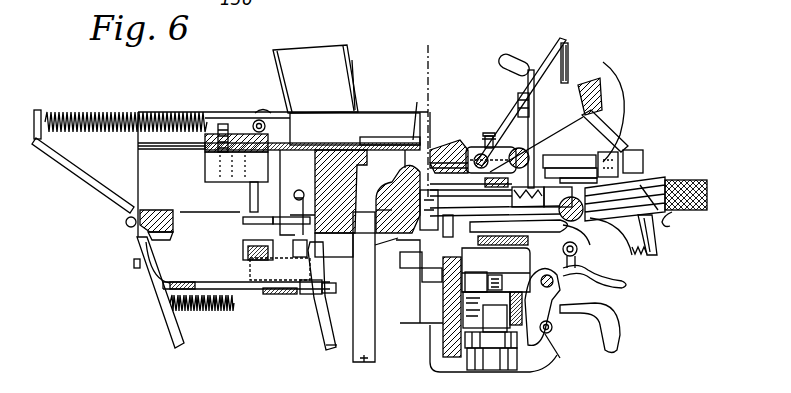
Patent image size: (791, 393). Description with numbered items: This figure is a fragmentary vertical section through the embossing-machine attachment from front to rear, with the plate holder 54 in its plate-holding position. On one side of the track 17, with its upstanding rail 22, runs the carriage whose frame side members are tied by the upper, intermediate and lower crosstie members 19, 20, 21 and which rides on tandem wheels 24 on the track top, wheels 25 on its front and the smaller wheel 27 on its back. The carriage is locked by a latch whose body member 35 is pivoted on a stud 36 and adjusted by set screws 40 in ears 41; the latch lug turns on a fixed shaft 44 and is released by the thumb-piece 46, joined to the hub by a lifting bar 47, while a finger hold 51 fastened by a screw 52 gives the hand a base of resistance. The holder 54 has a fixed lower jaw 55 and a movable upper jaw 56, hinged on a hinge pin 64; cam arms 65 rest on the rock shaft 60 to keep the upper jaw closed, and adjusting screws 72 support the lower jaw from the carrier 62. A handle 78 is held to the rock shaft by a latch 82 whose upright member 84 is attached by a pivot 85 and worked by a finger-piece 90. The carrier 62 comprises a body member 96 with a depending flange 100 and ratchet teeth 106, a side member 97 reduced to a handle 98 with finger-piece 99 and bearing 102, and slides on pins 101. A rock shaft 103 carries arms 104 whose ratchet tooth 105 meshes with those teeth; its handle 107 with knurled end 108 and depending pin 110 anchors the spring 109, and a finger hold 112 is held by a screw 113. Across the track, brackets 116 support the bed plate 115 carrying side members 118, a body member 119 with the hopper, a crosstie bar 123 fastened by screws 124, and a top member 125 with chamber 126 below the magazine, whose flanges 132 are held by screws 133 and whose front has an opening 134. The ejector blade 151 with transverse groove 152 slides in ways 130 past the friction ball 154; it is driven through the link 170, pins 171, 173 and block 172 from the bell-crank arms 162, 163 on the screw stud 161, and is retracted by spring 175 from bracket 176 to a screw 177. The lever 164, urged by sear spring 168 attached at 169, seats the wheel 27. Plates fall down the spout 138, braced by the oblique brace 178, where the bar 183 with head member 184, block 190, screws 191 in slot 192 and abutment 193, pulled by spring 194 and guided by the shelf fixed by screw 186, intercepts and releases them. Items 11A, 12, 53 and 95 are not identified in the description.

The firearm receiver 11A is at (190, 106).
The section line 12 is at (446, 72).
The track 17 is at (443, 312).
The upper crosstie member 19 is at (600, 98).
The intermediate crosstie member 20 is at (463, 227).
The lower crosstie member 21 is at (493, 359).
The track rail 22 is at (430, 282).
The wheels 24 is at (432, 210).
The second pair of wheels 25 is at (490, 362).
The wheel 27 is at (477, 269).
The body member 35 is at (540, 272).
The stud 36 is at (497, 270).
The set screws 40 is at (499, 302).
The ears 41 is at (503, 263).
The shaft 44 is at (592, 271).
The thumb-piece 46 is at (635, 284).
The lifting bar 47 is at (539, 341).
The finger hold 51 is at (620, 320).
The screw 52 is at (565, 356).
The plate 53 is at (443, 337).
The holder 54 is at (412, 165).
The lower jaw 55 is at (408, 176).
The upper jaw 56 is at (457, 146).
The rock shaft 60 is at (527, 154).
The carrier 62 is at (495, 222).
The hinge pin 64 is at (477, 150).
The cam arms 65 is at (490, 133).
The adjusting screws 72 is at (481, 152).
The handle 78 is at (572, 60).
The latch 82 is at (543, 62).
The upright member 84 is at (567, 82).
The pivot 85 is at (518, 98).
The finger-piece 90 is at (516, 58).
The bar 95 is at (569, 152).
The body member 96 is at (485, 183).
The side member 97 is at (563, 204).
The handle 98 is at (632, 186).
The finger-piece 99 is at (670, 230).
The flange 100 is at (471, 199).
The pins 101 is at (391, 202).
The bearing 102 is at (600, 166).
The rock shaft 103 is at (571, 174).
The arms 104 is at (580, 232).
The ratchet tooth 105 is at (530, 197).
The ratchet teeth 106 is at (519, 229).
The handle 107 is at (660, 192).
The knurled outer end portion 108 is at (707, 185).
The coiled spring 109 is at (648, 258).
The pin 110 is at (657, 247).
The finger hold 112 is at (620, 236).
The screw 113 is at (578, 249).
The bed plate 115 is at (170, 225).
The brackets 116 is at (401, 295).
The side members 118 is at (138, 174).
The body member 119 is at (317, 178).
The crosstie bar 123 is at (218, 182).
The screws 124 is at (162, 241).
The top member 125 is at (235, 111).
The chamber 126 is at (355, 129).
The ways 130 is at (184, 147).
The outturned flanges 132 is at (390, 133).
The screws 133 is at (378, 110).
The opening 134 is at (295, 58).
The down spout 138 is at (353, 313).
The ejector blade 151 is at (312, 187).
The transverse groove 152 is at (371, 131).
The friction ball 154 is at (413, 111).
The screw stud 161 is at (243, 248).
The bell-crank arm 162 is at (336, 259).
The bell-crank arm 163 is at (280, 271).
The lever 164 is at (413, 268).
The sear spring 168 is at (369, 250).
The attachment point 169 is at (375, 272).
The link 170 is at (210, 202).
The pin 171 is at (245, 220).
The block 172 is at (250, 188).
The pin 173 is at (288, 226).
The coiled spring 175 is at (93, 114).
The bracket 176 is at (68, 167).
The screws 177 is at (222, 124).
The brace 178 is at (170, 340).
The bar 183 is at (326, 350).
The head member 184 is at (333, 296).
The screw 186 is at (134, 264).
The block 190 is at (238, 281).
The screws 191 is at (300, 294).
The longitudinal slot 192 is at (247, 292).
The abutment 193 is at (322, 294).
The coiled spring 194 is at (160, 303).